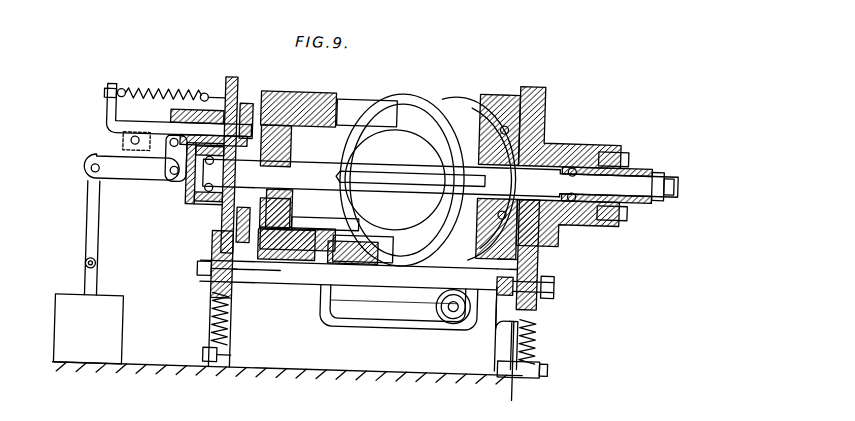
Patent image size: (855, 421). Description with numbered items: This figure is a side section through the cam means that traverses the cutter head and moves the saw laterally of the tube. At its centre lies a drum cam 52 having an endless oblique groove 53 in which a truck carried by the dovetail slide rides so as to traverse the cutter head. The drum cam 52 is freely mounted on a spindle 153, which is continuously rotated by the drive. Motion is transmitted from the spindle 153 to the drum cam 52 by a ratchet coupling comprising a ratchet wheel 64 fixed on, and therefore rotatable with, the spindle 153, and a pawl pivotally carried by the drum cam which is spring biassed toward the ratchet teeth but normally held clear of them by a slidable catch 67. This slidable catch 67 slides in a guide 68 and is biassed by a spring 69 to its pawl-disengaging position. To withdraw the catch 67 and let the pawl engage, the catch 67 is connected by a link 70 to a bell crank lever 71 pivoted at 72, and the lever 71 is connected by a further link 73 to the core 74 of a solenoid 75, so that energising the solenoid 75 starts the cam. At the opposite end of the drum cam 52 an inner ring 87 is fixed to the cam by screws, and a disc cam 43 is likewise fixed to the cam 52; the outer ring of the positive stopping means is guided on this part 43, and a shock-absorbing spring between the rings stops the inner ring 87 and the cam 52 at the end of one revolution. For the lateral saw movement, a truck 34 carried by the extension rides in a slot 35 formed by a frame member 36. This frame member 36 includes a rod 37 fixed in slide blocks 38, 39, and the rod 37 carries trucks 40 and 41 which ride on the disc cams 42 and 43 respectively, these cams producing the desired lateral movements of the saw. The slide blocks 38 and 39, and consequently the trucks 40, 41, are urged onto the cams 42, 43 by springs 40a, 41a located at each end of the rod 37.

The truck 34 is at (452, 311).
The slot 35 is at (374, 308).
The frame member 36 is at (336, 325).
The rod 37 is at (318, 277).
The slide block 38 is at (212, 297).
The slide block 39 is at (542, 301).
The truck 40 is at (268, 297).
The spring 40a is at (225, 337).
The truck 41 is at (506, 297).
The spring 41a is at (540, 329).
The disc cam 42 is at (310, 123).
The disc cam 43 is at (501, 104).
The drum cam 52 is at (410, 96).
The endless oblique groove 53 is at (444, 119).
The ratchet wheel 64 is at (270, 116).
The slidable catch 67 is at (163, 139).
The guide 68 is at (243, 115).
The spring 69 is at (165, 85).
The link 70 is at (147, 161).
The bell crank lever 71 is at (121, 191).
The pivot 72 is at (172, 179).
The link 73 is at (95, 242).
The core 74 is at (95, 289).
The solenoid 75 is at (107, 331).
The inner ring 87 is at (536, 131).
The spindle 153 is at (330, 172).